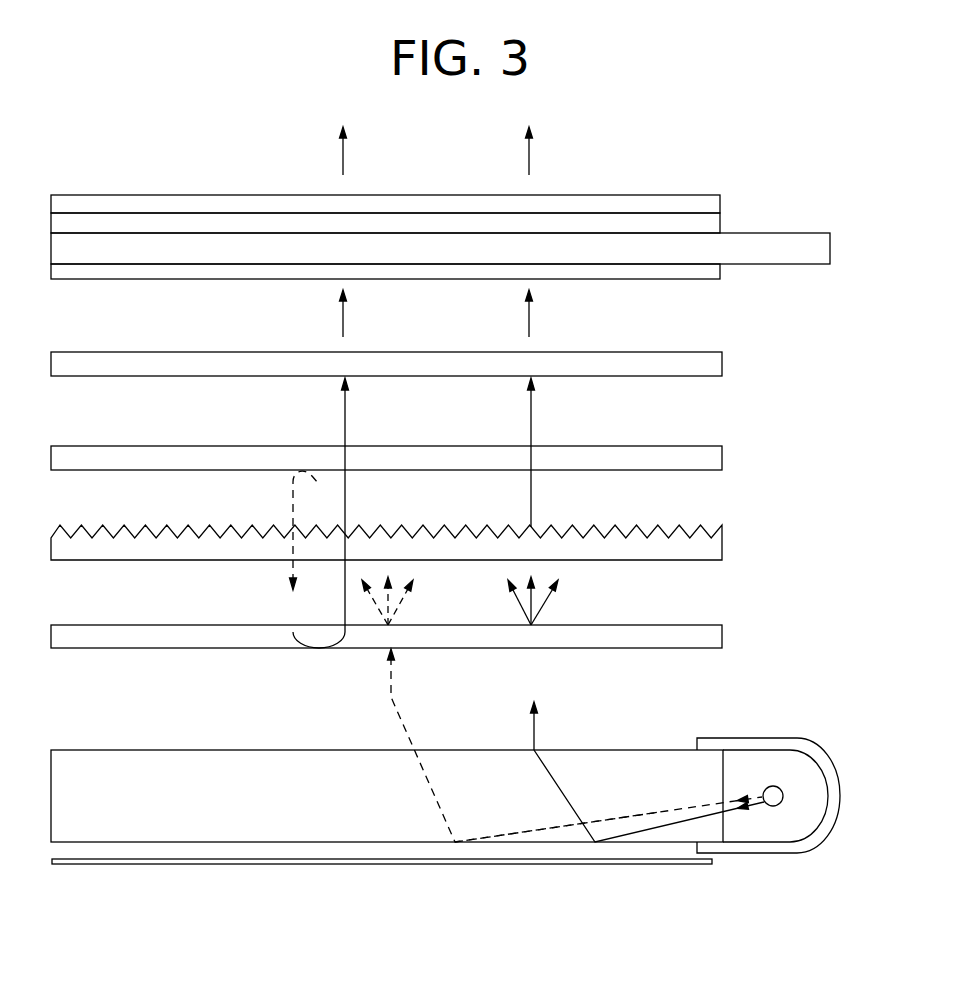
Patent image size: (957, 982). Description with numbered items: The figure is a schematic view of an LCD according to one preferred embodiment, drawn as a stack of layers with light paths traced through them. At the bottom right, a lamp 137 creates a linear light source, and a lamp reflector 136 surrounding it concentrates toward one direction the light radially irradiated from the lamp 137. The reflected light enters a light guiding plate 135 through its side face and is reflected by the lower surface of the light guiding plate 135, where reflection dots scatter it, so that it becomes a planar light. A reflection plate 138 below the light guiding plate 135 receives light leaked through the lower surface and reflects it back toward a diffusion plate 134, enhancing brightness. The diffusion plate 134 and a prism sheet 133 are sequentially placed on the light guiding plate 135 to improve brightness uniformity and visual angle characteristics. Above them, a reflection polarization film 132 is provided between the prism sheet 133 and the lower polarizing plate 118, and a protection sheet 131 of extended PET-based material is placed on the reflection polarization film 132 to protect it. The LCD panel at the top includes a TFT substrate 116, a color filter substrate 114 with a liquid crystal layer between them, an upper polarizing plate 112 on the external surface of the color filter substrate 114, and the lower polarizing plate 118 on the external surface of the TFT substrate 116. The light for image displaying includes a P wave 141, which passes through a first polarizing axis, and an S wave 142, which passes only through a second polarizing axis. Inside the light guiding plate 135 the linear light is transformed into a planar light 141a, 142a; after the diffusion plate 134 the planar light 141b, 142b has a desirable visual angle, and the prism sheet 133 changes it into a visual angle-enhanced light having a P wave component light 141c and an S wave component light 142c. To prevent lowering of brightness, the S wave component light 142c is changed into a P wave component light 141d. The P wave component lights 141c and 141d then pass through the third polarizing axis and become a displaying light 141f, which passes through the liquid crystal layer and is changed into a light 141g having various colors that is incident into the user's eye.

The upper polarizing plate 112 is at (720, 197).
The color filter substrate 114 is at (720, 220).
The TFT substrate 116 is at (830, 248).
The lower polarizing plate 118 is at (720, 271).
The protection sheet 131 is at (722, 355).
The reflection polarization film 132 is at (722, 452).
The prism sheet 133 is at (722, 540).
The diffusion plate 134 is at (722, 632).
The light guiding plate 135 is at (677, 750).
The lamp reflector 136 is at (832, 832).
The lamp 137 is at (783, 796).
The reflection plate 138 is at (712, 862).
The P wave 141 is at (757, 807).
The planar light 141a is at (563, 787).
The planar light 141b is at (545, 600).
The P wave component light 141c is at (531, 417).
The P wave component light 141d is at (345, 497).
The displaying light 141f is at (343, 317).
The light having various colors 141g is at (343, 157).
The S wave 142 is at (750, 792).
The planar light 142a is at (655, 813).
The planar light 142b is at (400, 603).
The S wave component light 142c is at (293, 493).